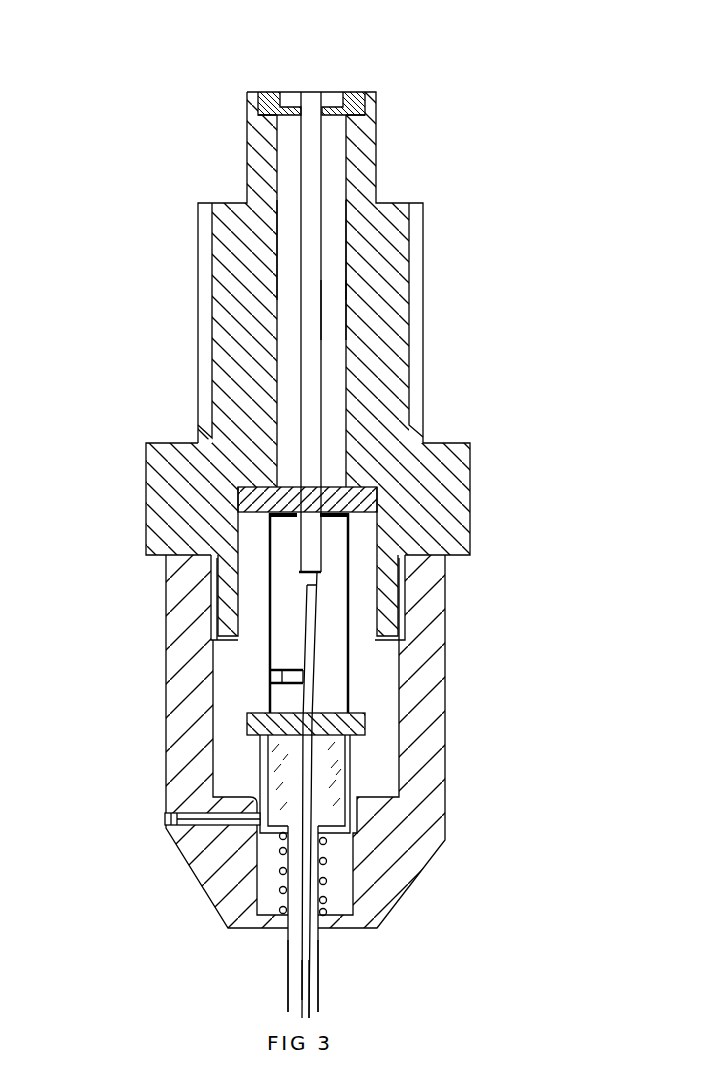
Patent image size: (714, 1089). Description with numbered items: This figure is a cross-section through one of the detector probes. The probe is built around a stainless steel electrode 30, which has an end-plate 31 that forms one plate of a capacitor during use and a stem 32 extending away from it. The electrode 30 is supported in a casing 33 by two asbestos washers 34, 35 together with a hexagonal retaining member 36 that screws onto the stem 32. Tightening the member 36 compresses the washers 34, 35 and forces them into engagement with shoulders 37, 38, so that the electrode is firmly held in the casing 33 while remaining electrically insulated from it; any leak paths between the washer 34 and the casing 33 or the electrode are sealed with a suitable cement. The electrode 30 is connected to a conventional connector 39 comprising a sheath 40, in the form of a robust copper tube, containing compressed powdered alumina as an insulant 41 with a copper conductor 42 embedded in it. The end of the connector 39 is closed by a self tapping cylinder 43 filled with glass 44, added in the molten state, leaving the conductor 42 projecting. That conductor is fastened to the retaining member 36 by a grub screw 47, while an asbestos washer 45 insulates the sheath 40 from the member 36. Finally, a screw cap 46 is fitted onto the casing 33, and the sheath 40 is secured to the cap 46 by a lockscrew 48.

The electrode 30 is at (330, 232).
The end-plate 31 is at (318, 102).
The stem 32 is at (313, 318).
The casing 33 is at (232, 288).
The asbestos washer 34 is at (262, 94).
The asbestos washer 35 is at (353, 505).
The hexagonal retaining member 36 is at (330, 658).
The shoulder 37 is at (270, 117).
The shoulder 38 is at (210, 443).
The connector 39 is at (322, 973).
The sheath 40 is at (288, 950).
The insulant 41 is at (295, 975).
The conductor 42 is at (307, 1006).
The self tapping cylinder 43 is at (355, 822).
The glass 44 is at (330, 775).
The asbestos washer 45 is at (358, 723).
The screw cap 46 is at (168, 763).
The grub screw 47 is at (284, 675).
The lockscrew 48 is at (258, 830).